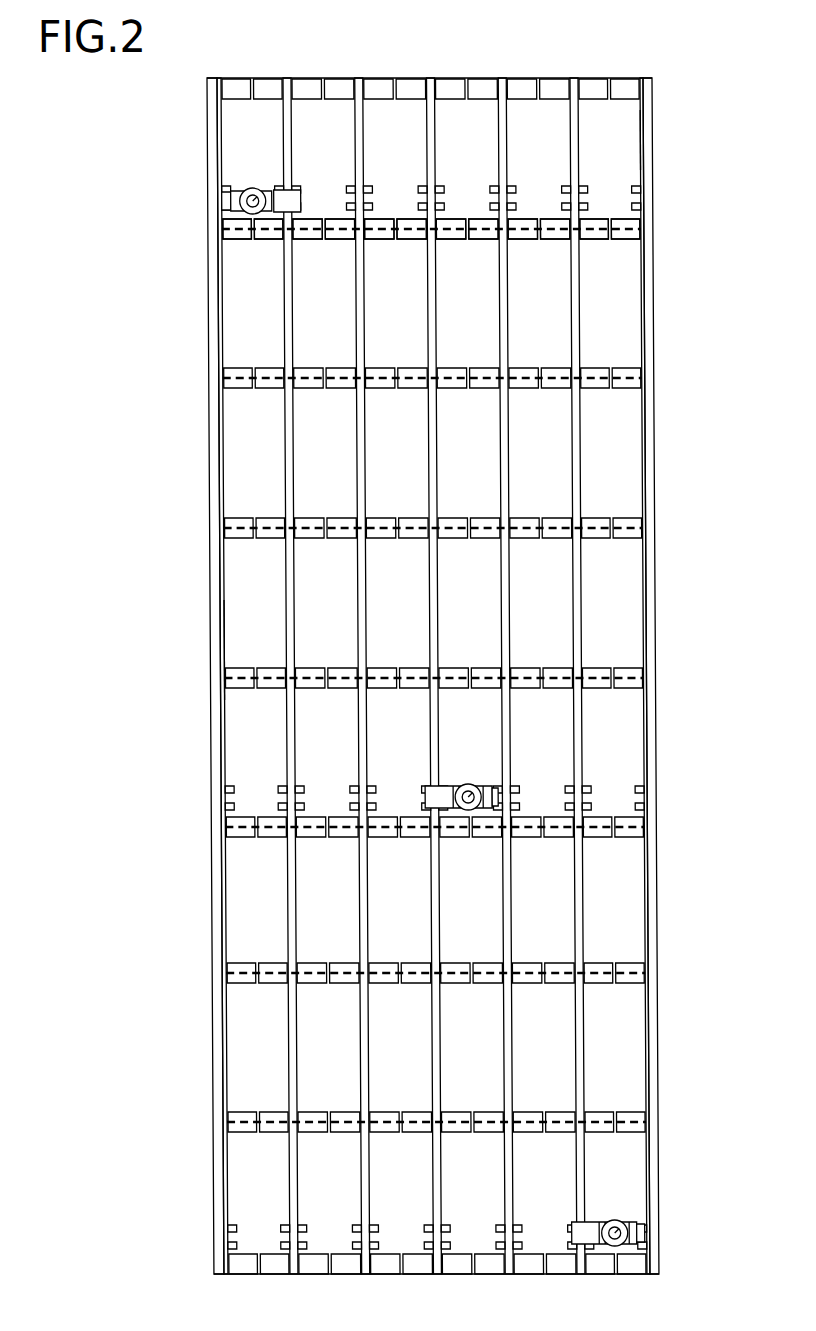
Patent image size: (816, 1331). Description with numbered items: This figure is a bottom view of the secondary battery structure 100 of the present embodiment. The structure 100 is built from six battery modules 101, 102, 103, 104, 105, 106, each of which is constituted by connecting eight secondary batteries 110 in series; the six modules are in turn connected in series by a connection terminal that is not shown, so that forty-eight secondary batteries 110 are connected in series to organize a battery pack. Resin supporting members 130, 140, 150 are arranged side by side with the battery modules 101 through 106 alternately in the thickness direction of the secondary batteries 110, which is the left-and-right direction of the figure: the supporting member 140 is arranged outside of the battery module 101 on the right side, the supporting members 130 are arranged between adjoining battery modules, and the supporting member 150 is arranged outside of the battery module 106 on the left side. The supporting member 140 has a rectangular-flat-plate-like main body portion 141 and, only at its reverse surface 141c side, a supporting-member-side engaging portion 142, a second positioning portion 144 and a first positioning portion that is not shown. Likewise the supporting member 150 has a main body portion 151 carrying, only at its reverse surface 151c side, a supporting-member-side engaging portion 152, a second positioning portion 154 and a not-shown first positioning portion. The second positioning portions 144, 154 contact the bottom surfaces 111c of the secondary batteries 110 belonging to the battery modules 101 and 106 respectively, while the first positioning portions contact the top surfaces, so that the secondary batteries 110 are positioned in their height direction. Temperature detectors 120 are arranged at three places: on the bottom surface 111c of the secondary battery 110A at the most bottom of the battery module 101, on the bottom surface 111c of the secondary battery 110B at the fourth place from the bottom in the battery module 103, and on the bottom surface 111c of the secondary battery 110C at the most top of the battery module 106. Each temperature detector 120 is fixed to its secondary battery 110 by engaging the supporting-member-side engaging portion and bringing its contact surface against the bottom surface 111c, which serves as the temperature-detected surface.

The secondary battery structure 100 is at (676, 92).
The battery module 101 is at (597, 118).
The battery module 102 is at (530, 120).
The battery module 103 is at (461, 118).
The battery module 104 is at (395, 118).
The battery module 105 is at (332, 127).
The battery module 106 is at (243, 123).
The secondary battery 110 is at (238, 910).
The secondary battery 110A is at (606, 1152).
The secondary battery 110B is at (476, 690).
The secondary battery 110C is at (244, 149).
The bottom surface 111c is at (270, 118).
The temperature detector 120 is at (236, 193).
The supporting member 130 is at (287, 1274).
The supporting member 140 is at (648, 540).
The main body portion 141 is at (648, 326).
The reverse surface 141c is at (641, 150).
The supporting-member-side engaging portion 142 is at (641, 207).
The second positioning portion 144 is at (632, 232).
The supporting member 150 is at (215, 369).
The main body portion 151 is at (214, 560).
The reverse surface 151c is at (220, 638).
The supporting-member-side engaging portion 152 is at (226, 806).
The second positioning portion 154 is at (231, 385).